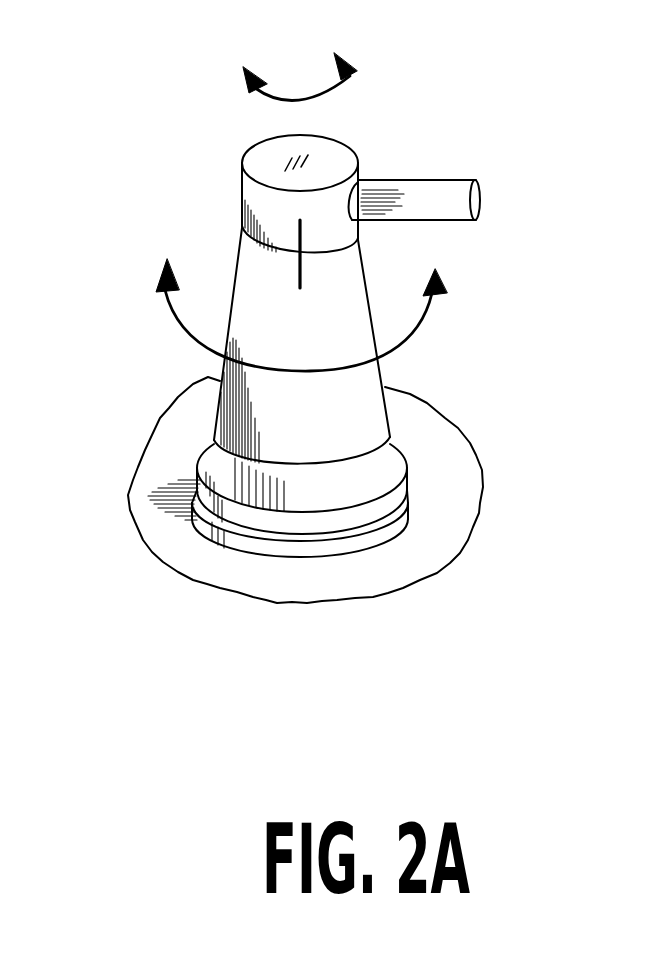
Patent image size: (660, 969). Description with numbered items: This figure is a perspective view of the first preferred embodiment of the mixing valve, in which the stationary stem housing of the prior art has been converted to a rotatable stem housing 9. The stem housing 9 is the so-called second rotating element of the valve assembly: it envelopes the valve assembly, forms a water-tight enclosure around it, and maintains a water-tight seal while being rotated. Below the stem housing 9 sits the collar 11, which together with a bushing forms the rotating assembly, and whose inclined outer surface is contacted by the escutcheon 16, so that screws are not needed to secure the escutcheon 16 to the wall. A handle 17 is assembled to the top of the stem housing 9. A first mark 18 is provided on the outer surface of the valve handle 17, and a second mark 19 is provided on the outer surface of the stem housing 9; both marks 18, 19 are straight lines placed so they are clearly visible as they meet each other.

The stem housing 9 is at (341, 253).
The collar 11 is at (403, 488).
The escutcheon 16 is at (427, 538).
The handle 17 is at (353, 145).
The first mark 18 is at (299, 234).
The second mark 19 is at (300, 272).